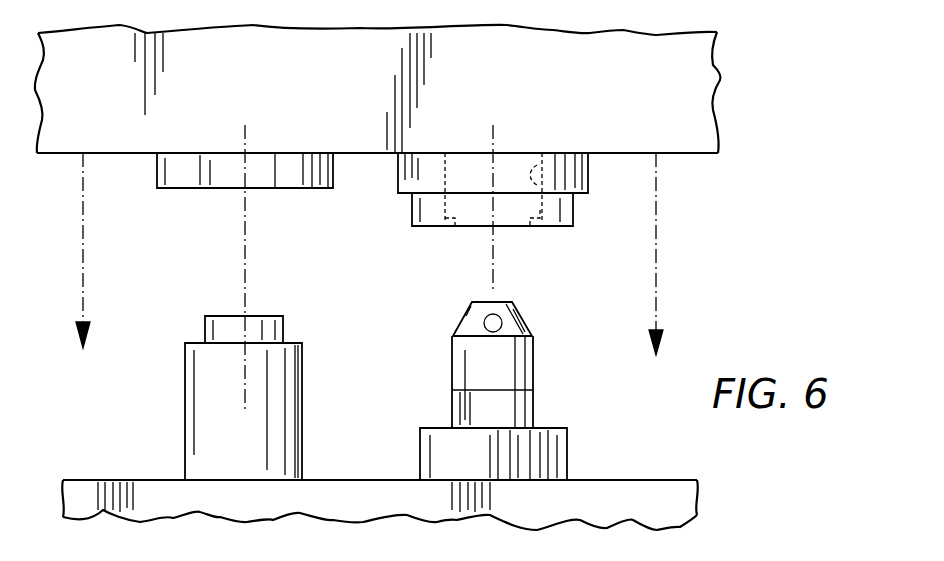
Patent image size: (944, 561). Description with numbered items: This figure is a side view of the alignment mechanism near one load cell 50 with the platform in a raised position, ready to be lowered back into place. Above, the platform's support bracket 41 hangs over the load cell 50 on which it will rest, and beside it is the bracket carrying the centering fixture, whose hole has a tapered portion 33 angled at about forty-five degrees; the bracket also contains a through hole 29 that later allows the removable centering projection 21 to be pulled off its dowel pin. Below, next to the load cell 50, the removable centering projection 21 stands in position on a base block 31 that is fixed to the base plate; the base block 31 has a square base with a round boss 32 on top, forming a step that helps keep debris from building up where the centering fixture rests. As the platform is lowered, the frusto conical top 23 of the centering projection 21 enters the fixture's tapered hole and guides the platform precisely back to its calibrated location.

The support bracket 41 is at (292, 175).
The through hole 29 is at (565, 182).
The tapered portion 33 is at (527, 218).
The frusto conical top 23 is at (522, 308).
The centering projection 21 is at (527, 368).
The round boss 32 is at (525, 408).
The base block 31 is at (557, 452).
The load cell 50 is at (275, 443).